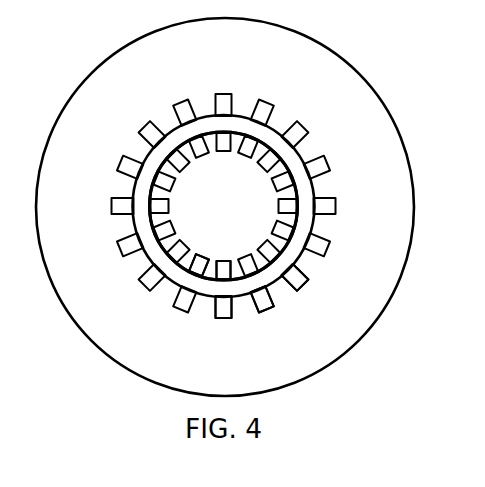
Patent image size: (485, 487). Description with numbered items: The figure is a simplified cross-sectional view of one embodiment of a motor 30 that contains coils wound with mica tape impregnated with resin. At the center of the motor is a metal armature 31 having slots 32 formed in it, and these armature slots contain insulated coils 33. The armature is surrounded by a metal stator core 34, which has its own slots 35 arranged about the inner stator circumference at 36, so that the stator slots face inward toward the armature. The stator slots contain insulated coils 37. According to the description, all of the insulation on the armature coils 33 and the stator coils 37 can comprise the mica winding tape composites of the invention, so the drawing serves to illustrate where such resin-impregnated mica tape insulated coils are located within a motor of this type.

The motor 30 is at (98, 384).
The metal armature 31 is at (252, 201).
The slots 32 is at (202, 155).
The insulated coils 33 is at (223, 259).
The metal stator core 34 is at (318, 348).
The slots 35 is at (290, 296).
The inner stator circumference 36 is at (203, 299).
The insulated coils 37 is at (114, 276).